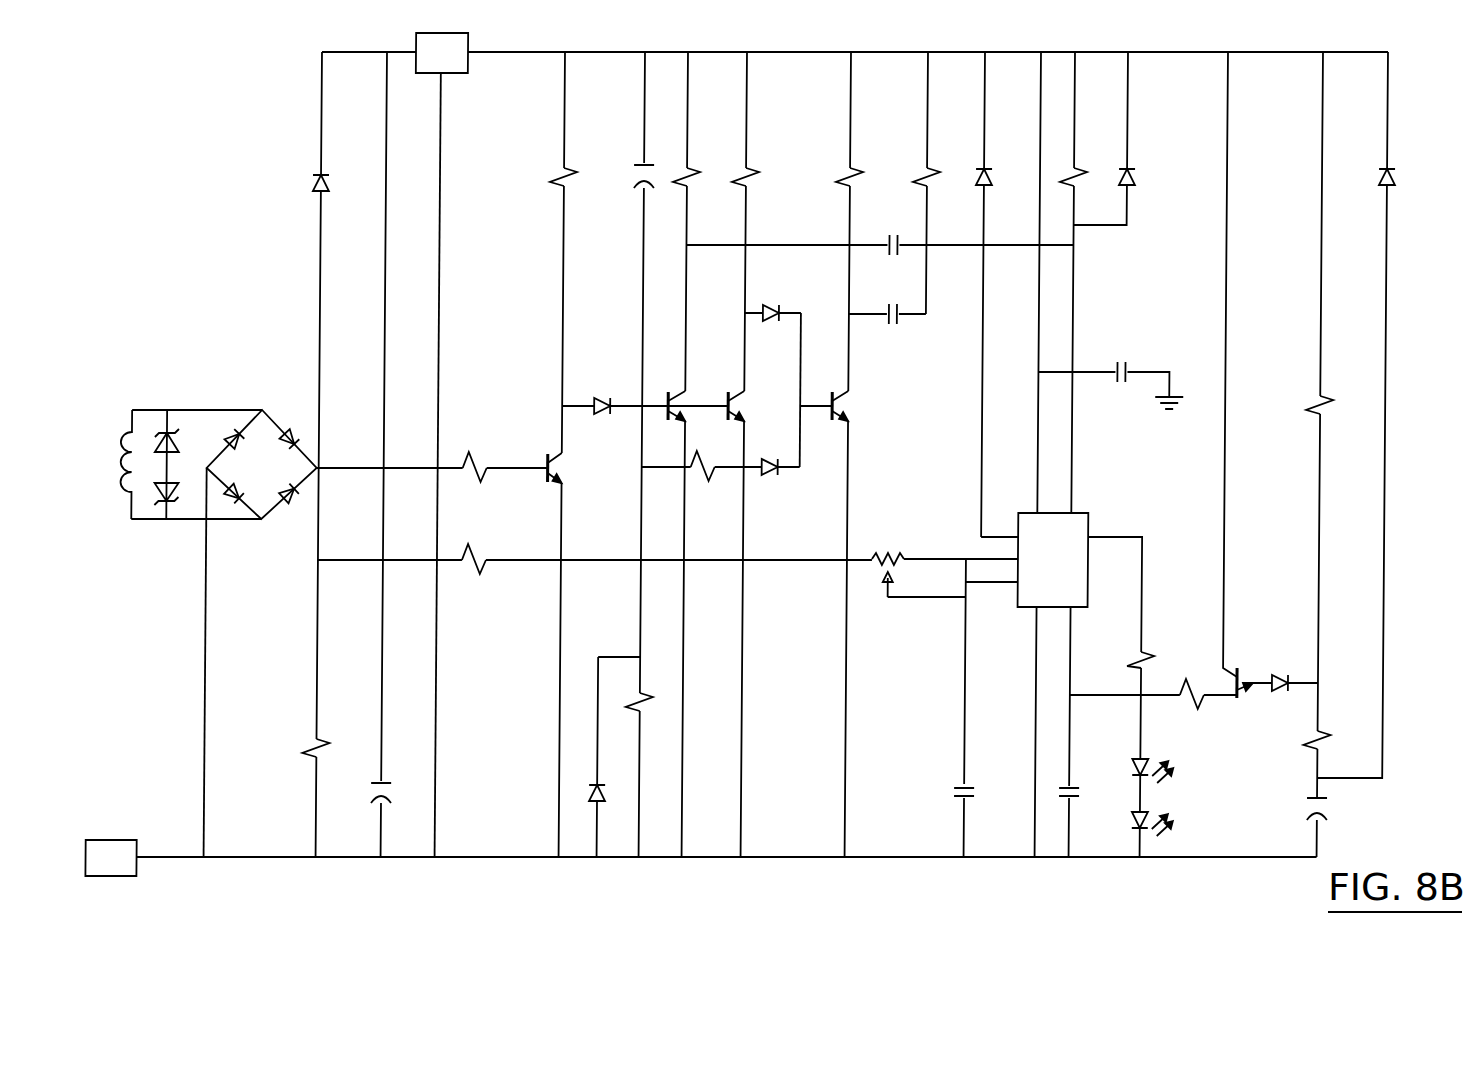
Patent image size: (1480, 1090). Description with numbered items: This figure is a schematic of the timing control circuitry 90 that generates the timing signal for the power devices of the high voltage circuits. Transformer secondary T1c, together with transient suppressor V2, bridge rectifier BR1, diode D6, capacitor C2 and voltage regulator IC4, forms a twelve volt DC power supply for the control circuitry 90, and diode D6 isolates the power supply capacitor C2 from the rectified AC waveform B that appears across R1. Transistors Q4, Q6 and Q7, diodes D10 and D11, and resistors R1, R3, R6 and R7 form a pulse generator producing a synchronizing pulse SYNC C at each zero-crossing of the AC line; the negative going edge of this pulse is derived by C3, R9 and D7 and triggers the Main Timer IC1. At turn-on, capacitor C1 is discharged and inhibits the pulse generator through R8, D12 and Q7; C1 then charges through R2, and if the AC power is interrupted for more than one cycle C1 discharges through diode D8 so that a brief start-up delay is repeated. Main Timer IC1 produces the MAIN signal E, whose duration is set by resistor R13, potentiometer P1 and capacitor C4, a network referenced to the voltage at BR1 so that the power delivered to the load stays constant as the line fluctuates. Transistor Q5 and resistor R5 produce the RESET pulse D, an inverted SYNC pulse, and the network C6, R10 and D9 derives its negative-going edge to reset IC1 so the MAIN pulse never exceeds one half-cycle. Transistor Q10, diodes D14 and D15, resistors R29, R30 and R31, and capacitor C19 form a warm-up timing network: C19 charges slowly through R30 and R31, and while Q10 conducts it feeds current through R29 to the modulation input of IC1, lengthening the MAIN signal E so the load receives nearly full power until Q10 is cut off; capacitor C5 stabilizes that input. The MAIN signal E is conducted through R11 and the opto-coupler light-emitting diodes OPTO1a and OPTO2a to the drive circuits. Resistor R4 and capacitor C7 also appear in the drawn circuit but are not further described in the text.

The timing control circuitry 90 is at (215, 203).
The voltage regulator IC4 is at (442, 53).
The Main Timer IC1 is at (1051, 558).
The transformer secondary T1c is at (168, 458).
The transient suppressor V2 is at (176, 464).
The bridge rectifier BR1 is at (261, 451).
The diode D6 is at (306, 200).
The diode D7 is at (997, 164).
The diode D8 is at (584, 807).
The diode D9 is at (1141, 191).
The diode D10 is at (602, 420).
The diode D11 is at (788, 297).
The diode D12 is at (776, 483).
The diode D14 is at (1285, 698).
The diode D15 is at (1365, 162).
The resistor R1 is at (298, 755).
The resistor R2 is at (649, 717).
The resistor R3 is at (479, 449).
The resistor R4 is at (552, 165).
The resistor R5 is at (699, 165).
The resistor R6 is at (758, 165).
The resistor R7 is at (865, 164).
The resistor R8 is at (706, 479).
The resistor R9 is at (938, 164).
The resistor R10 is at (1090, 164).
The resistor R11 is at (1114, 669).
The resistor R13 is at (482, 577).
The resistor R29 is at (1193, 708).
The resistor R30 is at (1334, 728).
The resistor R31 is at (1301, 392).
The capacitor C1 is at (628, 183).
The power supply capacitor C2 is at (393, 796).
The capacitor C3 is at (902, 328).
The capacitor C4 is at (946, 791).
The capacitor C5 is at (1082, 778).
The capacitor C6 is at (893, 259).
The capacitor C7 is at (1149, 368).
The capacitor C19 is at (1336, 812).
The transistor Q4 is at (571, 468).
The transistor Q5 is at (694, 399).
The transistor Q6 is at (753, 406).
The transistor Q7 is at (856, 406).
The transistor Q10 is at (1254, 669).
The potentiometer P1 is at (888, 553).
The opto-coupler light-emitting diode OPTO1a is at (1189, 768).
The opto-coupler light-emitting diode OPTO2a is at (1189, 823).
The rectified AC waveform B is at (332, 441).
The SYNC pulse C is at (864, 336).
The RESET pulse D is at (704, 268).
The MAIN signal E is at (1111, 517).